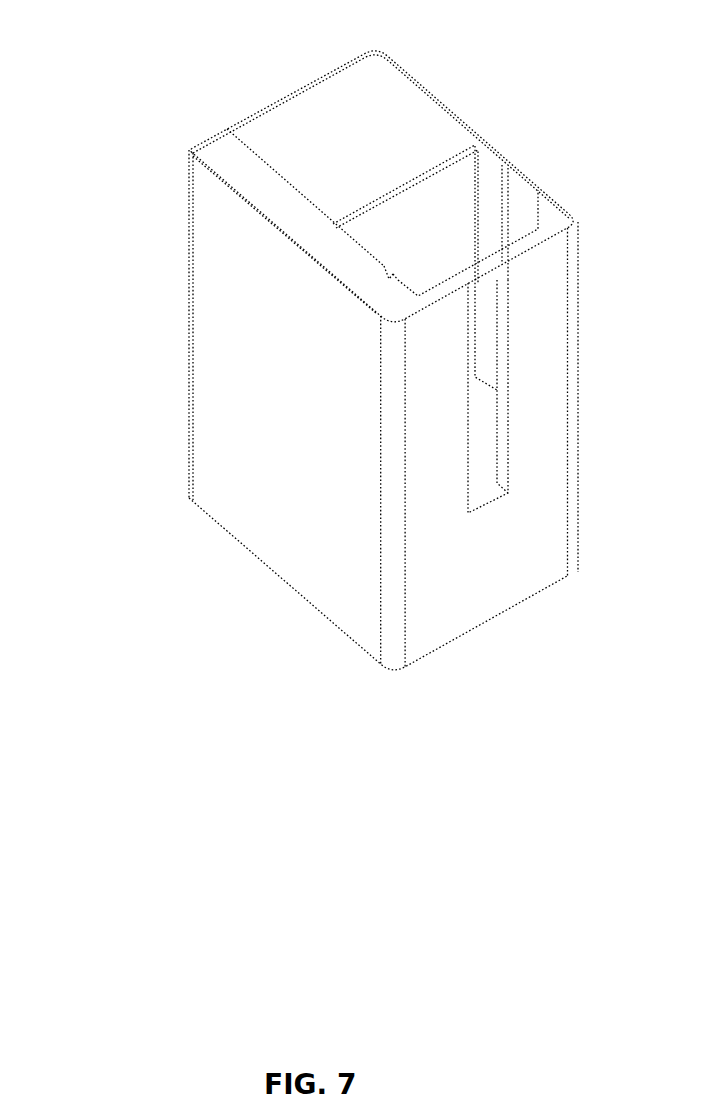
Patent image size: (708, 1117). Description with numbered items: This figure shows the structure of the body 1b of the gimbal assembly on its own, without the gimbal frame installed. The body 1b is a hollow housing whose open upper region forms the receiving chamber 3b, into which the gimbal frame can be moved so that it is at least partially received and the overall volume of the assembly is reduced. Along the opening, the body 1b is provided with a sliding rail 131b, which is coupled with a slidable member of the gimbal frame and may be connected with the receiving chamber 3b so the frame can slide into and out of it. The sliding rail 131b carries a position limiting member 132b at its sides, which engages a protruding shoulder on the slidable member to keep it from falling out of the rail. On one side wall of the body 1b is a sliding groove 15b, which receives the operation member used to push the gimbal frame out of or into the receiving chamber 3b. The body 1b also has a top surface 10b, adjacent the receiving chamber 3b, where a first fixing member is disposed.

The body 1b is at (317, 112).
The top surface 10b is at (272, 180).
The receiving chamber 3b is at (433, 195).
The position limiting member 132b is at (350, 250).
The sliding rail 131b is at (364, 265).
The sliding groove 15b is at (497, 430).